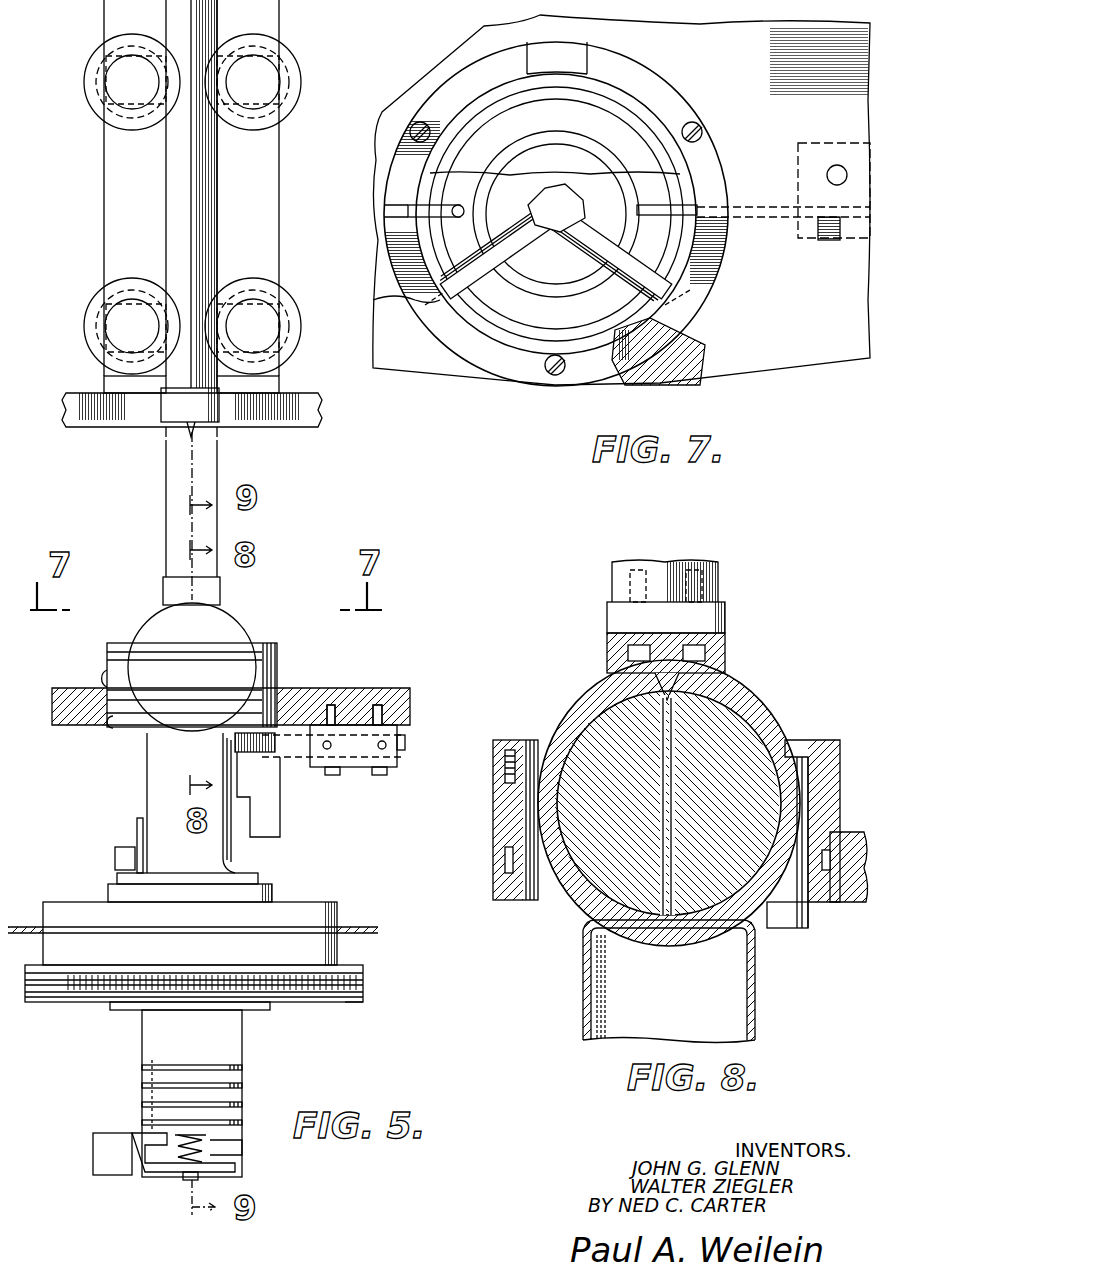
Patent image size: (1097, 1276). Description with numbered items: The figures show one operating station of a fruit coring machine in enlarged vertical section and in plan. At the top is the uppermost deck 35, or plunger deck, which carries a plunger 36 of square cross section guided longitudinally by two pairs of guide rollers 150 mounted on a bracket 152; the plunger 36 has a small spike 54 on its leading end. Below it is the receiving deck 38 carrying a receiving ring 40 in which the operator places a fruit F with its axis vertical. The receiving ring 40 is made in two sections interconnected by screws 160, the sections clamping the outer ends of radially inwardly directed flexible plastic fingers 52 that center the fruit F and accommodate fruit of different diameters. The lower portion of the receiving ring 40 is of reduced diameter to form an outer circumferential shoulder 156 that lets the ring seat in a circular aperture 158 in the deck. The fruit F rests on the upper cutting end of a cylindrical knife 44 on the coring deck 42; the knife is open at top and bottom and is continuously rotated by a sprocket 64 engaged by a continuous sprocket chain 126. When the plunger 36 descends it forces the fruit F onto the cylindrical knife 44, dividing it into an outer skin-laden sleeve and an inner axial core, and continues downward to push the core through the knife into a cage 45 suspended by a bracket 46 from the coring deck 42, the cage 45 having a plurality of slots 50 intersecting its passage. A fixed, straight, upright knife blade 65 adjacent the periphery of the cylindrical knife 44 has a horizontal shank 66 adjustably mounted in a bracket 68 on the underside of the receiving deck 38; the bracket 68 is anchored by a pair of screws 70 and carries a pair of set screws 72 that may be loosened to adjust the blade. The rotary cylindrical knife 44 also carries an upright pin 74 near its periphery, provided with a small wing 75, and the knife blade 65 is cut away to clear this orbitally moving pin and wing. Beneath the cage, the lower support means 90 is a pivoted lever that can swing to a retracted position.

In FIG. 5, the uppermost deck 35 is at (322, 410).
In FIG. 5, the plunger 36 is at (217, 207).
In FIG. 8, the plunger 36 is at (718, 596).
In FIG. 5, the receiving deck 38 is at (372, 688).
In FIG. 7, the receiving deck 38 is at (812, 321).
In FIG. 8, the receiving deck 38 is at (860, 905).
In FIG. 5, the receiving ring 40 is at (279, 666).
In FIG. 7, the receiving ring 40 is at (700, 165).
In FIG. 8, the receiving ring 40 is at (493, 832).
In FIG. 5, the coring deck 42 is at (355, 968).
In FIG. 5, the cylindrical knife 44 is at (147, 760).
In FIG. 7, the cylindrical knife 44 is at (485, 185).
In FIG. 8, the cylindrical knife 44 is at (583, 995).
In FIG. 5, the cage 45 is at (142, 1096).
In FIG. 5, the bracket 46 is at (242, 1032).
In FIG. 5, the slots 50 is at (235, 1102).
In FIG. 7, the flexible plastic fingers 52 is at (545, 74).
In FIG. 8, the flexible plastic fingers 52 is at (795, 928).
In FIG. 5, the spike 54 is at (186, 430).
In FIG. 8, the spike 54 is at (700, 676).
In FIG. 5, the sprocket 64 is at (128, 985).
In FIG. 5, the knife blade 65 is at (270, 830).
In FIG. 7, the knife blade 65 is at (645, 205).
In FIG. 5, the horizontal shank 66 is at (300, 760).
In FIG. 7, the horizontal shank 66 is at (778, 220).
In FIG. 5, the bracket 68 is at (360, 775).
In FIG. 7, the bracket 68 is at (818, 143).
In FIG. 5, the screws 70 is at (335, 775).
In FIG. 7, the screws 70 is at (826, 176).
In FIG. 5, the set screws 72 is at (325, 750).
In FIG. 7, the set screws 72 is at (828, 240).
In FIG. 5, the upright pin 74 is at (140, 818).
In FIG. 7, the upright pin 74 is at (458, 205).
In FIG. 5, the wing 75 is at (125, 847).
In FIG. 7, the wing 75 is at (384, 208).
In FIG. 5, the lower support means 90 is at (160, 1172).
In FIG. 5, the sprocket chain 126 is at (345, 1005).
In FIG. 5, the guide rollers 150 is at (112, 30).
In FIG. 5, the bracket 152 is at (279, 153).
In FIG. 5, the outer circumferential shoulder 156 is at (107, 675).
In FIG. 8, the outer circumferential shoulder 156 is at (838, 825).
In FIG. 5, the circular aperture 158 is at (113, 725).
In FIG. 7, the circular aperture 158 is at (675, 340).
In FIG. 8, the circular aperture 158 is at (826, 890).
In FIG. 7, the screws 160 is at (700, 128).
In FIG. 8, the screws 160 is at (512, 750).
In FIG. 5, the fruit F is at (236, 618).
In FIG. 7, the fruit F is at (588, 139).
In FIG. 8, the fruit F is at (760, 700).